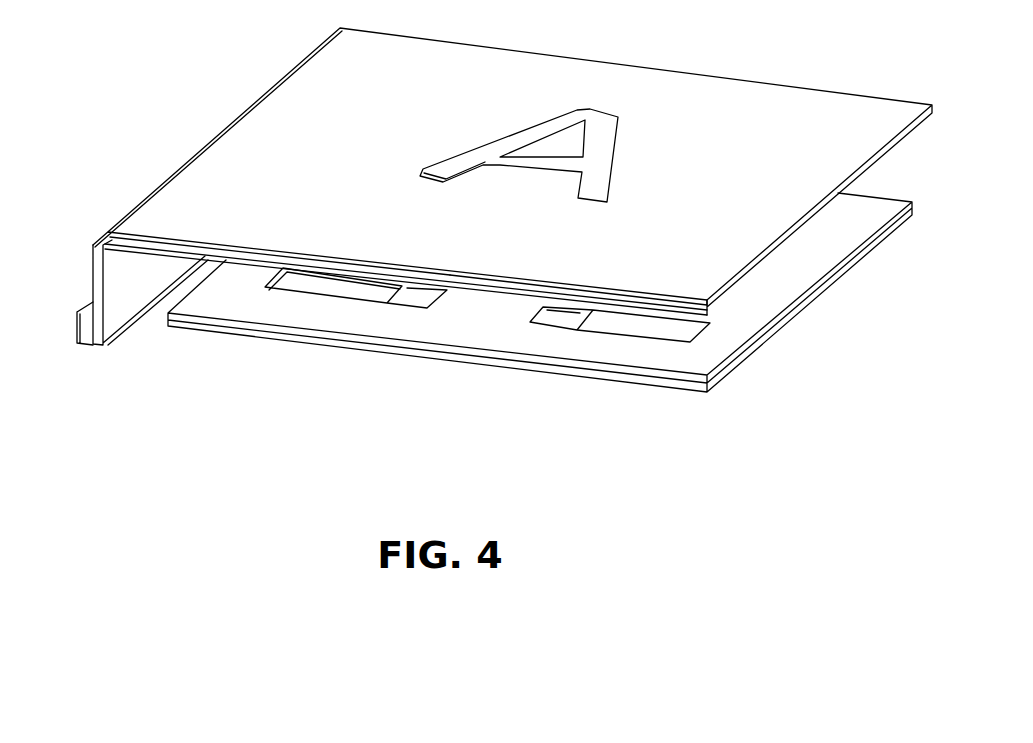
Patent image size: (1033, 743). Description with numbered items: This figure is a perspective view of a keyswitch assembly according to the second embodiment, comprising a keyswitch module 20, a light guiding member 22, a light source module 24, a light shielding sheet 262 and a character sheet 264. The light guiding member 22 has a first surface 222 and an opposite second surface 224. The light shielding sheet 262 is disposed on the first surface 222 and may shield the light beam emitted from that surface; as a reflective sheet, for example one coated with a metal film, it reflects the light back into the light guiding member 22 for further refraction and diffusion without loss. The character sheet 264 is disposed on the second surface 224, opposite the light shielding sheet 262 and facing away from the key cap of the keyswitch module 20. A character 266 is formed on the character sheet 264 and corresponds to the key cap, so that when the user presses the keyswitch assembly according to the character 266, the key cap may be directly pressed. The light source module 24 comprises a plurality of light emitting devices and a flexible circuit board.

The keyswitch module 20 is at (540, 308).
The light guiding member 22 is at (400, 325).
The first surface 222 is at (167, 252).
The second surface 224 is at (188, 239).
The light source module 24 is at (77, 309).
The light shielding sheet 262 is at (672, 302).
The character sheet 264 is at (676, 297).
The character 266 is at (603, 131).